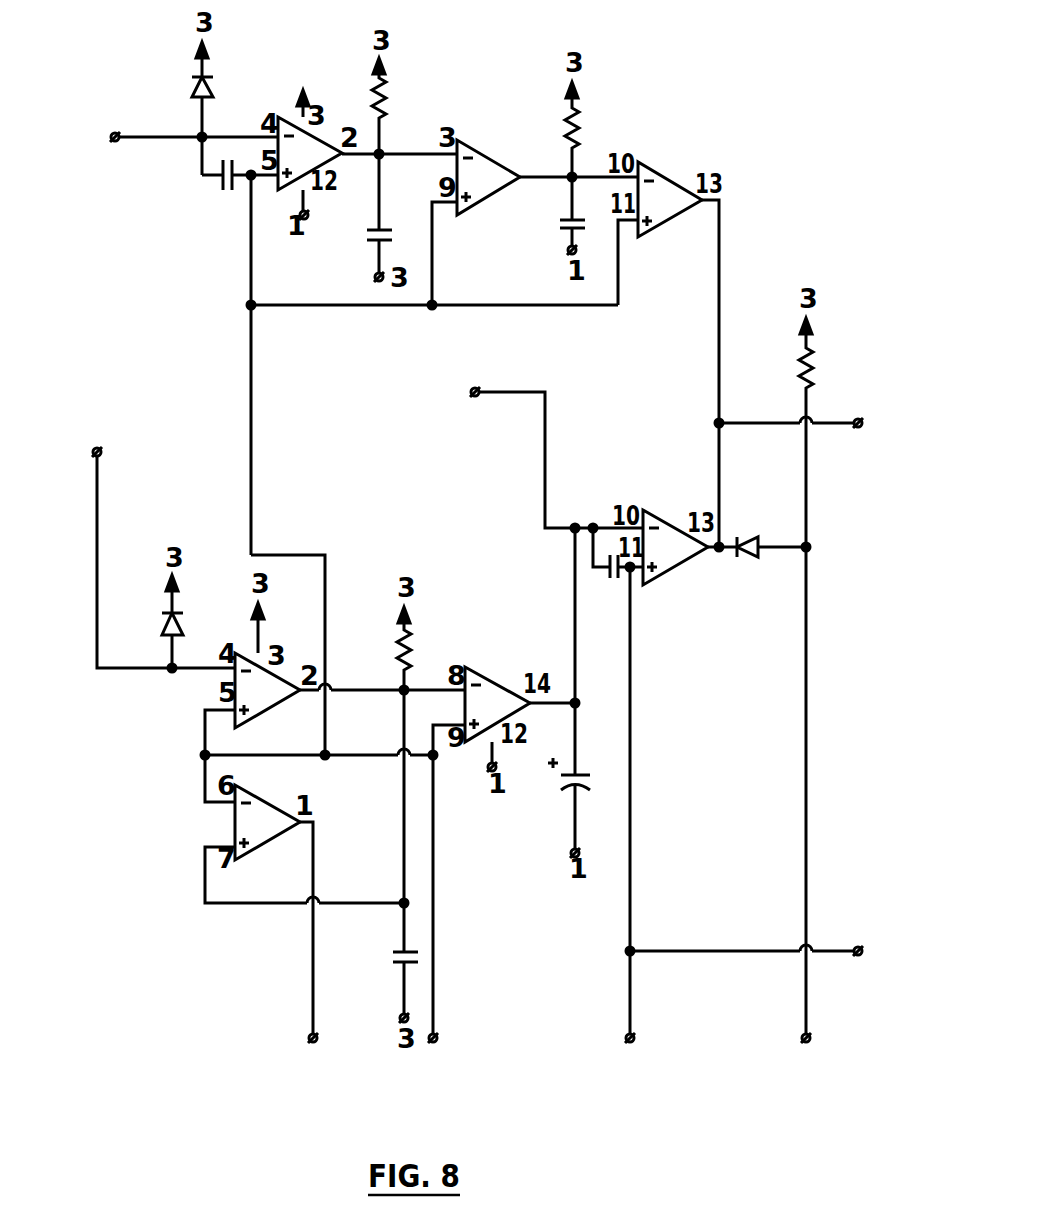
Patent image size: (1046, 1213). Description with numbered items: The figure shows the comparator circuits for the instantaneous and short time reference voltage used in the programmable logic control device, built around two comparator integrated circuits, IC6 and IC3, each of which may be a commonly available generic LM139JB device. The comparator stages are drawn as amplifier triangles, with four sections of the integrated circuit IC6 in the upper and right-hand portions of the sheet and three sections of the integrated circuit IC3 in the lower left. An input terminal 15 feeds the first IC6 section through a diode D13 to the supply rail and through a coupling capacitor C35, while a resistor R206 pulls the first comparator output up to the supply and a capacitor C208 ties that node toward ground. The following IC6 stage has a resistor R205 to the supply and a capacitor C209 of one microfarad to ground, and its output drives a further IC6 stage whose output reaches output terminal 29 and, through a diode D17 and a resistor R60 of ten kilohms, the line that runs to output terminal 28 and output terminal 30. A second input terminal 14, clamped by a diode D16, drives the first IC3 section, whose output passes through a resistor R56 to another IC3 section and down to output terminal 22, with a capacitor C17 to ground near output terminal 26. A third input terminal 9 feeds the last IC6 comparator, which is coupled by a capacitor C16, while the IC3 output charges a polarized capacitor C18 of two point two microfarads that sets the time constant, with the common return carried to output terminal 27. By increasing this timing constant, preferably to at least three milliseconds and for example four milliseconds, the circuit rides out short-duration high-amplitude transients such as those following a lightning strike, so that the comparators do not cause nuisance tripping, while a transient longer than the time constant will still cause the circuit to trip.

The input terminal 15 is at (140, 137).
The input terminal 14 is at (158, 541).
The input terminal 9 is at (546, 450).
The output terminal 29 is at (809, 423).
The output terminal 30 is at (764, 950).
The output terminal 22 is at (312, 950).
The output terminal 26 is at (437, 917).
The output terminal 27 is at (630, 824).
The output terminal 28 is at (808, 814).
The diode D13 is at (229, 89).
The diode D16 is at (145, 621).
The diode D17 is at (757, 565).
The capacitor C35 is at (222, 174).
The capacitor C208 is at (353, 218).
The capacitor C209 1uF C209 is at (546, 224).
The capacitor C16 is at (611, 567).
The capacitor C17 is at (385, 856).
The capacitor C18 2.2uF C18 is at (546, 693).
The resistor R206 is at (415, 106).
The resistor R205 is at (606, 129).
The resistor R60 10K ohm R60 is at (845, 432).
The resistor R56 is at (433, 648).
The comparator integrated circuit IC6 is at (493, 351).
The comparator integrated circuit IC3 is at (382, 756).